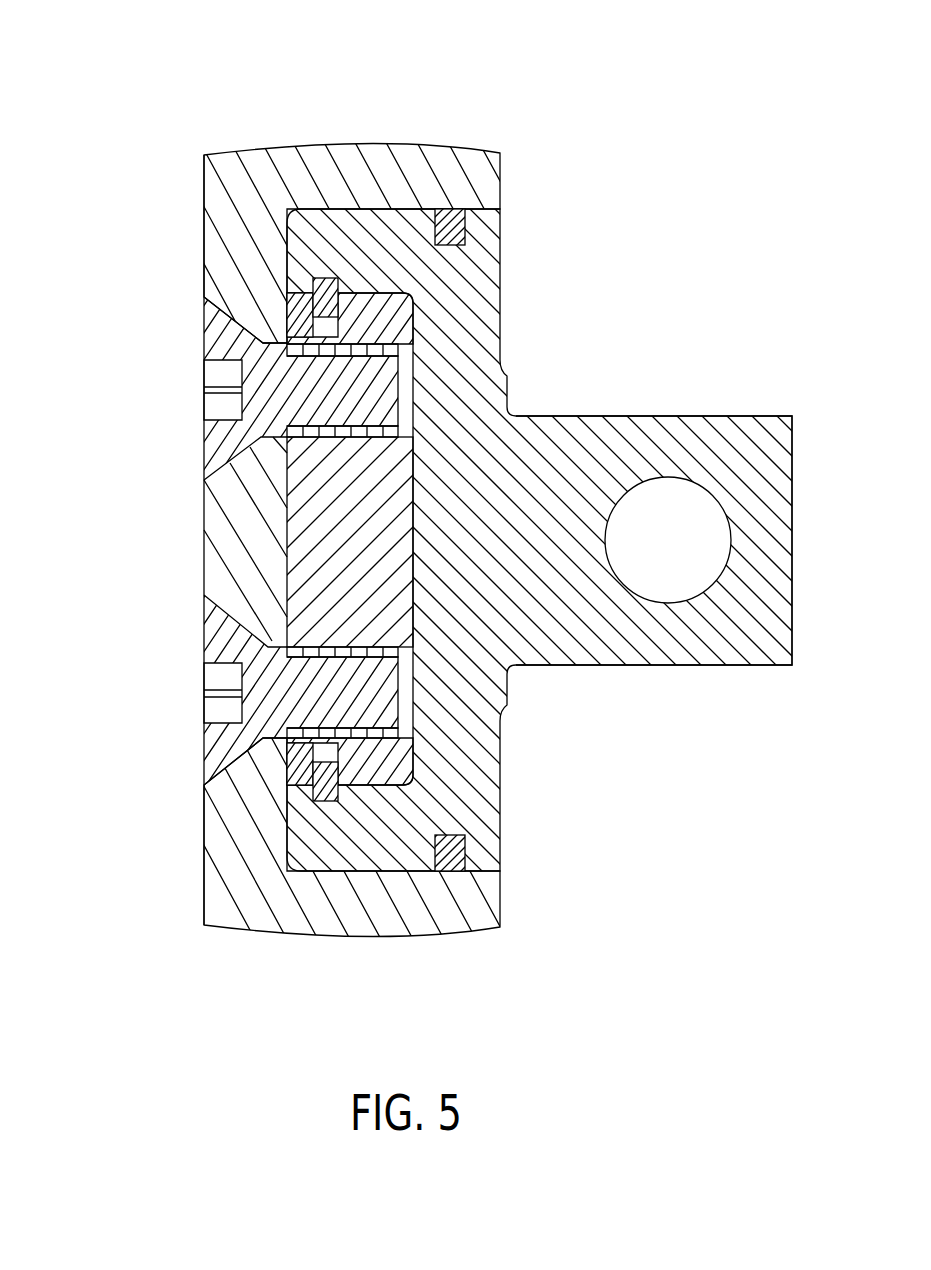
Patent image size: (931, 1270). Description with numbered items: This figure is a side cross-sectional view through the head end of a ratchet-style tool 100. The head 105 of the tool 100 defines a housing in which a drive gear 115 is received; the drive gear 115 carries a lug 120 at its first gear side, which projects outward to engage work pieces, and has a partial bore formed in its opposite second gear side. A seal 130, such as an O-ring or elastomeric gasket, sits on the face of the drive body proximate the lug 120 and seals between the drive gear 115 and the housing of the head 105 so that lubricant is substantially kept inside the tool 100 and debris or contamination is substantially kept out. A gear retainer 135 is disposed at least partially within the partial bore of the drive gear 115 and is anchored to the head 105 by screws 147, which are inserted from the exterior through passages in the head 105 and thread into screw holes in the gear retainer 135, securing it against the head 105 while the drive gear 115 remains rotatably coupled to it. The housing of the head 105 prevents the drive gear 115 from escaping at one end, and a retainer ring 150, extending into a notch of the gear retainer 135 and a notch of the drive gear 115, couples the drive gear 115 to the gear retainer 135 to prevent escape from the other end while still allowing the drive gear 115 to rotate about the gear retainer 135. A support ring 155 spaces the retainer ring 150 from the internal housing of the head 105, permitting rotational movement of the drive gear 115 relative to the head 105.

The tool 100 is at (465, 635).
The head 105 is at (345, 155).
The drive gear 115 is at (470, 714).
The lug 120 is at (745, 440).
The seal 130 is at (450, 862).
The gear retainer 135 is at (302, 527).
The screws 147 is at (222, 375).
The retainer ring 150 is at (322, 277).
The support ring 155 is at (295, 315).